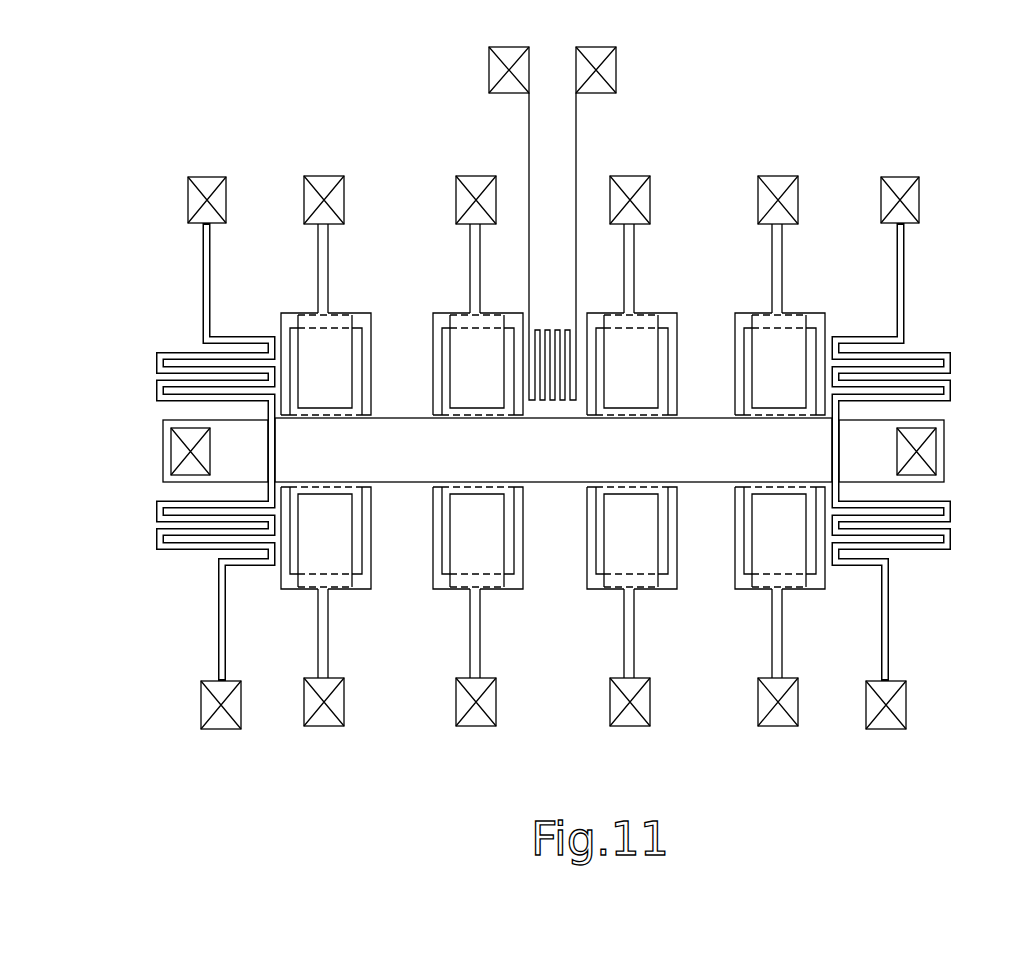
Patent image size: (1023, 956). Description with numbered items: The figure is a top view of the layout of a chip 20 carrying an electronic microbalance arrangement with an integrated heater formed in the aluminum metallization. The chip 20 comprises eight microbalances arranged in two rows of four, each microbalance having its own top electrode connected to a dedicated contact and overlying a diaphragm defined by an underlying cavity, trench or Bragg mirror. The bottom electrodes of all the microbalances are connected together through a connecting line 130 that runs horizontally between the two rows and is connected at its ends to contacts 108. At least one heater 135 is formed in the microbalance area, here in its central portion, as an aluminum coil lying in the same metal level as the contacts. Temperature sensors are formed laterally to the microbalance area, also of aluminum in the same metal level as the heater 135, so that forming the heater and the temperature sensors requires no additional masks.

The chip 20 is at (918, 134).
The contact 108 is at (176, 446).
The connecting line 130 is at (398, 432).
The heater 135 is at (541, 323).